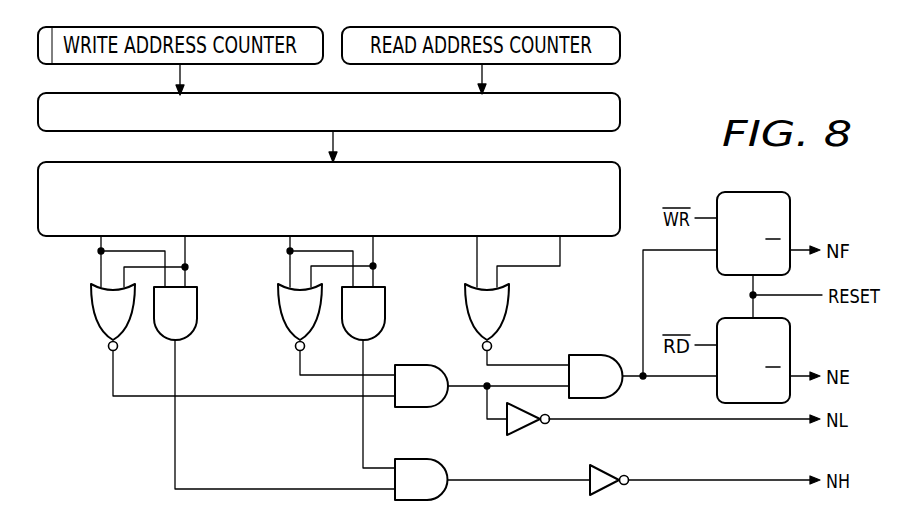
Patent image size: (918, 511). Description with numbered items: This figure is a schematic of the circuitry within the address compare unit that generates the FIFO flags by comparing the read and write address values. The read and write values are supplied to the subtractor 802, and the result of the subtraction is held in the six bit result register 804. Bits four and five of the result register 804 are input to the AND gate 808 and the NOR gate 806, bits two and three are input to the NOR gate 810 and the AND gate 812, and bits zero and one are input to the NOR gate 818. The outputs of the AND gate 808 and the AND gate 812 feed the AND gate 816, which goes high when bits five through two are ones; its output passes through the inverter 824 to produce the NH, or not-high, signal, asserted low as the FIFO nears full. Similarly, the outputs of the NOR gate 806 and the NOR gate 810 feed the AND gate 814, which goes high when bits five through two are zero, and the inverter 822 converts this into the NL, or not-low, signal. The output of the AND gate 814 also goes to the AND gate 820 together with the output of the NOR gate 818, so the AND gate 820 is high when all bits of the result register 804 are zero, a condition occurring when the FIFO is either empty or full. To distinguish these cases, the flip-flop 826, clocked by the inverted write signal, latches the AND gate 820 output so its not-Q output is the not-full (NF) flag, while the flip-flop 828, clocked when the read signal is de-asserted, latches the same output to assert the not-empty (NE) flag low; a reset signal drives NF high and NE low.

The subtractor 802 is at (622, 112).
The result register 804 is at (622, 182).
The NOR gate 806 is at (92, 318).
The AND gate 808 is at (197, 303).
The NOR gate 810 is at (278, 318).
The AND gate 812 is at (385, 303).
The AND gate 814 is at (420, 365).
The AND gate 816 is at (442, 460).
The NOR gate 818 is at (509, 303).
The AND gate 820 is at (598, 355).
The inverter 822 is at (527, 435).
The inverter 824 is at (610, 468).
The flip-flop 826 is at (790, 224).
The flip-flop 828 is at (790, 351).